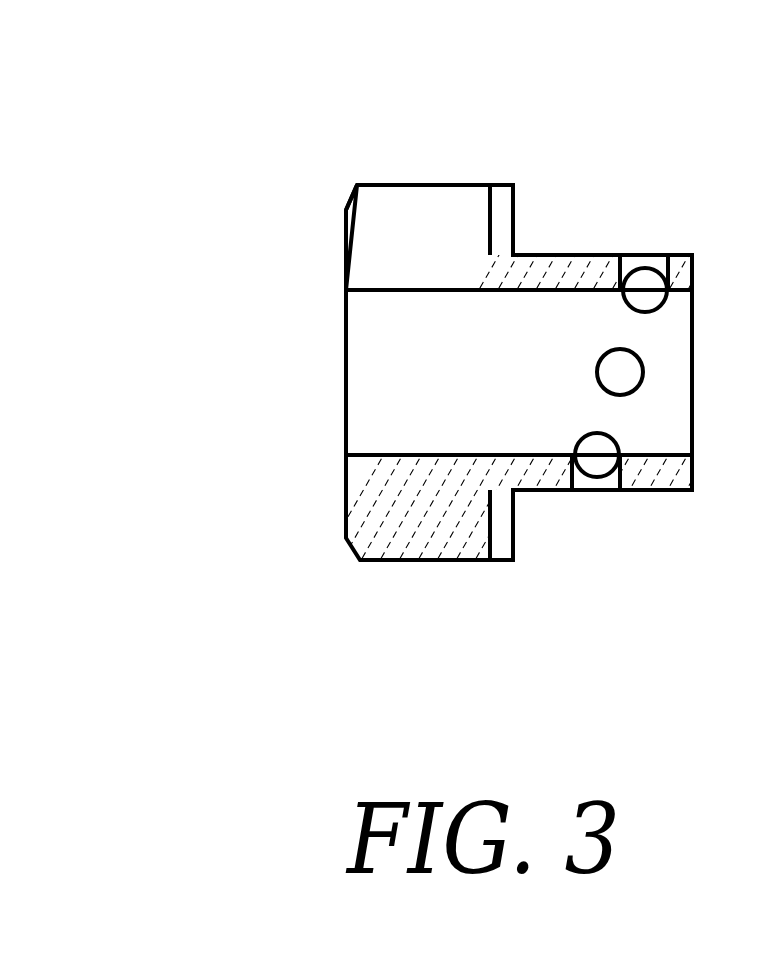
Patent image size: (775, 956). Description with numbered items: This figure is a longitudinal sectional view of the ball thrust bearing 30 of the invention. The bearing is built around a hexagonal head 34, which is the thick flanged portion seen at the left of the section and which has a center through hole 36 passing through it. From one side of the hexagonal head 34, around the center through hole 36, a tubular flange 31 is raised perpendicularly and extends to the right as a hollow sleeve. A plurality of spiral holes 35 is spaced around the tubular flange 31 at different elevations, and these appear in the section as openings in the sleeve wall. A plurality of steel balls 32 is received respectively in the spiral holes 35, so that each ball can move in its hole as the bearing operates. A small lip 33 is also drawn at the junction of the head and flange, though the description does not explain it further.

The ball thrust bearing 30 is at (343, 487).
The tubular flange 31 is at (568, 255).
The steel balls 32 is at (645, 290).
The annular lip 33 is at (502, 207).
The hexagonal head 34 is at (342, 222).
The spiral holes 35 is at (577, 490).
The center through hole 36 is at (343, 367).